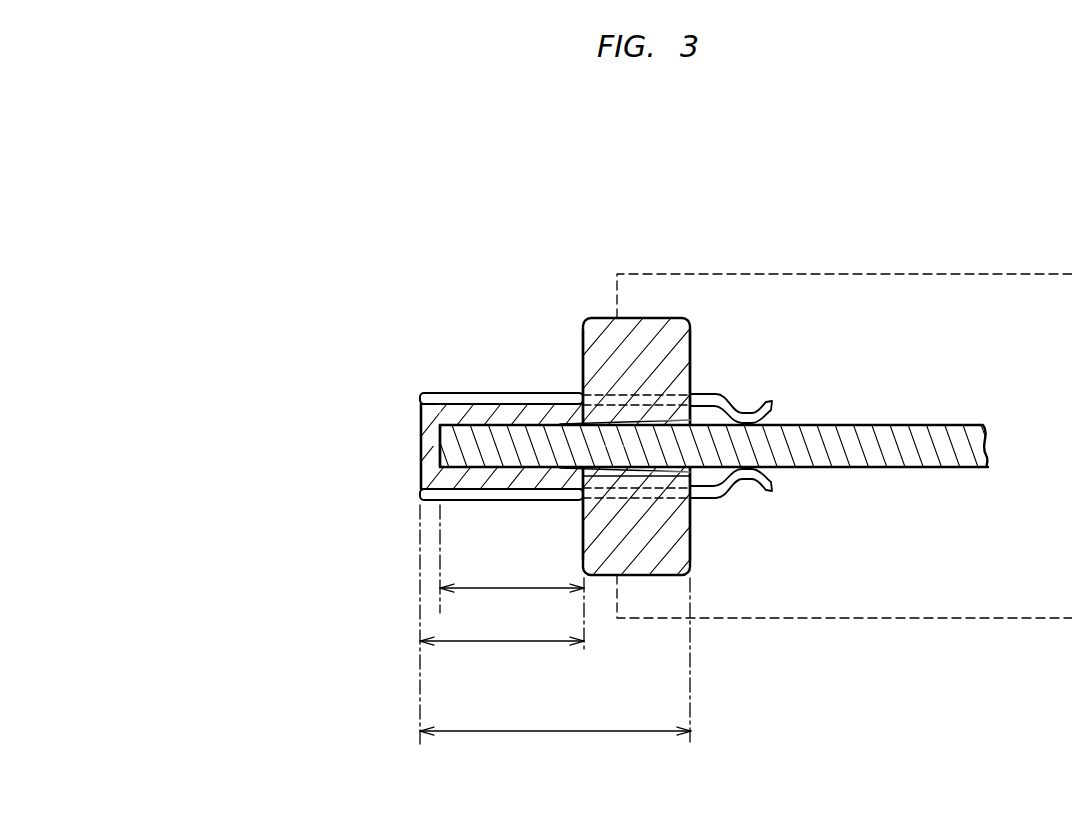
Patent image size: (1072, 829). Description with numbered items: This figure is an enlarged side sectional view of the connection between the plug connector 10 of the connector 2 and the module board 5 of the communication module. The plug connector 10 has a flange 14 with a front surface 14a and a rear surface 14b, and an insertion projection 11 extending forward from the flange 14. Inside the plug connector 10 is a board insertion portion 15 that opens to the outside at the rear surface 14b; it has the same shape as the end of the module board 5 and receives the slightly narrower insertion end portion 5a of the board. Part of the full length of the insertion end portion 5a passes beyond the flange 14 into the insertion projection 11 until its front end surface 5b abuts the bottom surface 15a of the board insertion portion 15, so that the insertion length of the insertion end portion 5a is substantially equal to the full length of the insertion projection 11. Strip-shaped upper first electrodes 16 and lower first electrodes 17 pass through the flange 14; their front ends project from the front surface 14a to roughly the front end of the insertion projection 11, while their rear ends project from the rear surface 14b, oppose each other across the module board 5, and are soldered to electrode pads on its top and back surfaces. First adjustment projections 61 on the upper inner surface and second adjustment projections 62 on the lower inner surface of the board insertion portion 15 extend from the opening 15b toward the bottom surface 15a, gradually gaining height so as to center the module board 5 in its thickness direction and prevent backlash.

The connector 2 is at (420, 298).
The plug connector 10 is at (658, 440).
The module board 5 is at (920, 468).
The insertion end portion 5a is at (610, 457).
The front end surface 5b is at (442, 458).
The insertion projection 11 is at (420, 447).
The flange 14 is at (650, 318).
The front surface 14a is at (572, 332).
The rear surface 14b is at (690, 363).
The board insertion portion 15 is at (505, 412).
The bottom surface 15a is at (462, 422).
The opening 15b is at (708, 417).
The upper first electrode 16 is at (772, 406).
The lower first electrode 17 is at (772, 487).
The first adjustment projection 61 is at (666, 420).
The second adjustment projection 62 is at (690, 480).